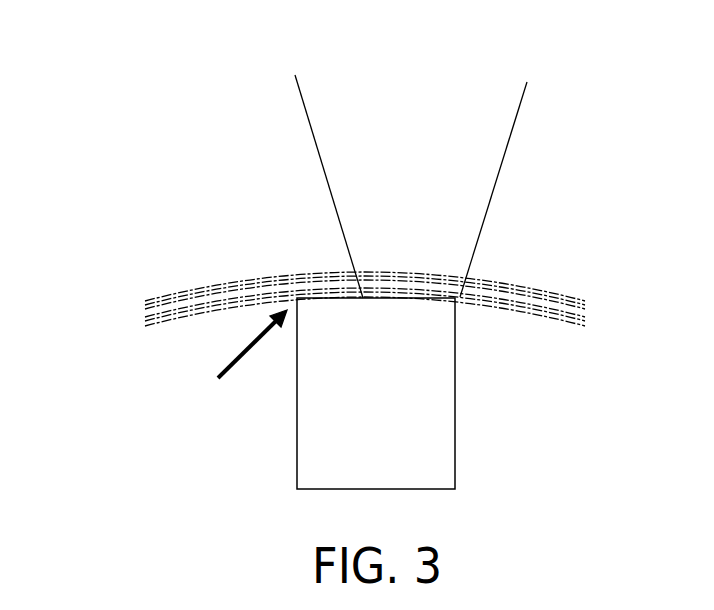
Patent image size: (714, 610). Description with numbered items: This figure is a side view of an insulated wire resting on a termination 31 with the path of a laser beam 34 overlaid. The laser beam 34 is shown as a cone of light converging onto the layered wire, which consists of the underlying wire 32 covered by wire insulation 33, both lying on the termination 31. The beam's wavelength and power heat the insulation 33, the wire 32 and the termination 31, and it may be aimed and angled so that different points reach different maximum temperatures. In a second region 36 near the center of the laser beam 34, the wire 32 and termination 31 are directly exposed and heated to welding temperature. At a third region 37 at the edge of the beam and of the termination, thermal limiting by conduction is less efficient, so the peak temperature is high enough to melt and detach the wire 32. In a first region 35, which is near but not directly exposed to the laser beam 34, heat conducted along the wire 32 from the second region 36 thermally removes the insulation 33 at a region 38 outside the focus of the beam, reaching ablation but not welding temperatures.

The termination 31 is at (460, 442).
The wire 32 is at (145, 318).
The wire insulation 33 is at (153, 297).
The laser beam 34 is at (512, 75).
The first region 35 is at (332, 290).
The second region 36 is at (407, 296).
The third region 37 is at (460, 277).
The region 38 is at (243, 369).